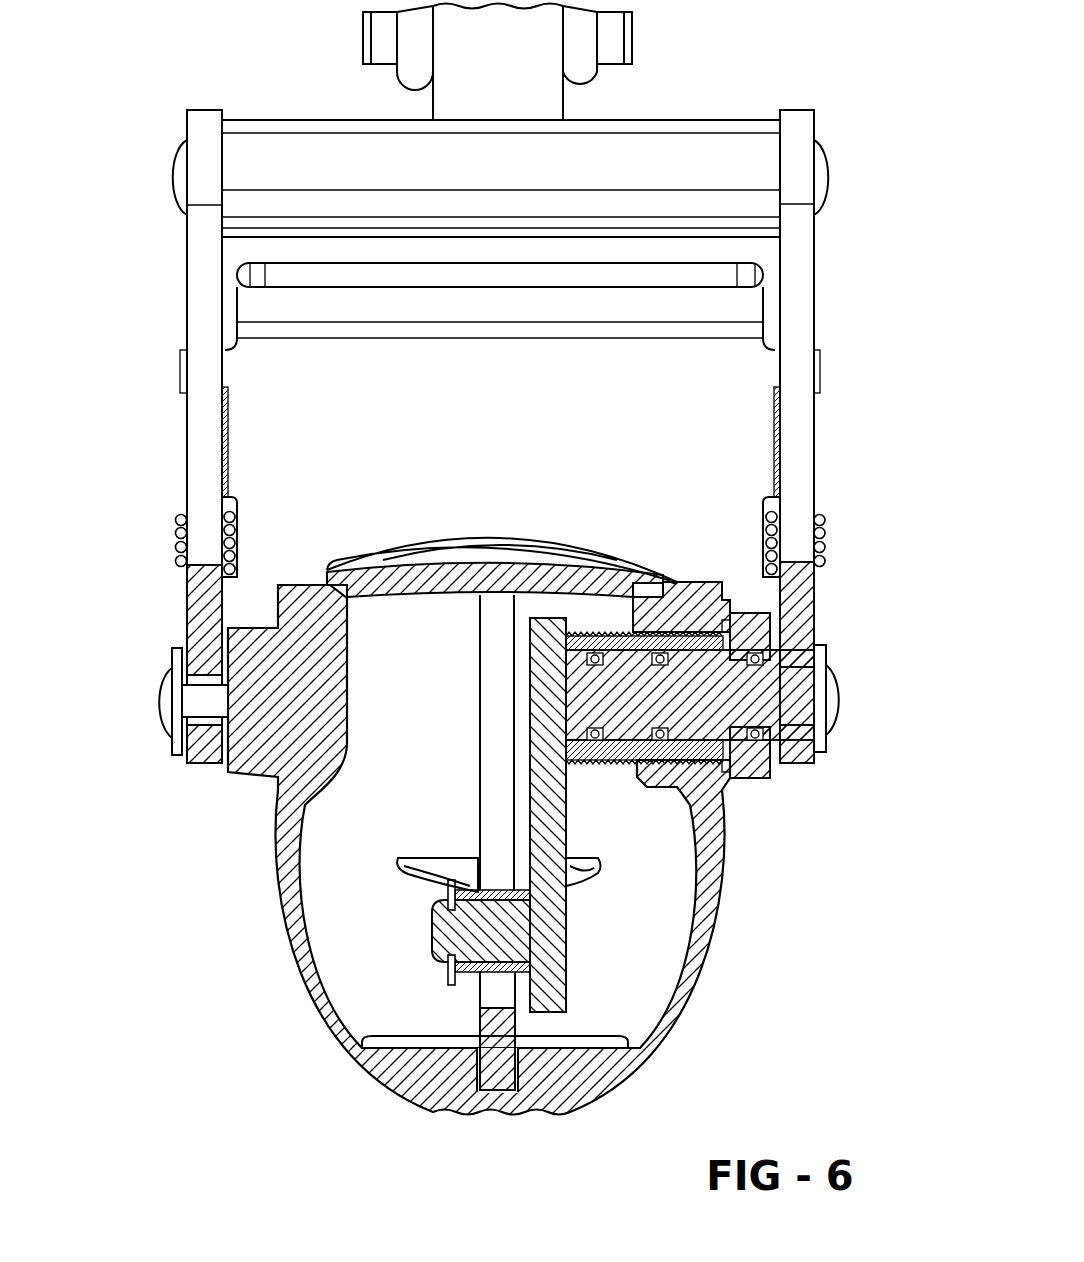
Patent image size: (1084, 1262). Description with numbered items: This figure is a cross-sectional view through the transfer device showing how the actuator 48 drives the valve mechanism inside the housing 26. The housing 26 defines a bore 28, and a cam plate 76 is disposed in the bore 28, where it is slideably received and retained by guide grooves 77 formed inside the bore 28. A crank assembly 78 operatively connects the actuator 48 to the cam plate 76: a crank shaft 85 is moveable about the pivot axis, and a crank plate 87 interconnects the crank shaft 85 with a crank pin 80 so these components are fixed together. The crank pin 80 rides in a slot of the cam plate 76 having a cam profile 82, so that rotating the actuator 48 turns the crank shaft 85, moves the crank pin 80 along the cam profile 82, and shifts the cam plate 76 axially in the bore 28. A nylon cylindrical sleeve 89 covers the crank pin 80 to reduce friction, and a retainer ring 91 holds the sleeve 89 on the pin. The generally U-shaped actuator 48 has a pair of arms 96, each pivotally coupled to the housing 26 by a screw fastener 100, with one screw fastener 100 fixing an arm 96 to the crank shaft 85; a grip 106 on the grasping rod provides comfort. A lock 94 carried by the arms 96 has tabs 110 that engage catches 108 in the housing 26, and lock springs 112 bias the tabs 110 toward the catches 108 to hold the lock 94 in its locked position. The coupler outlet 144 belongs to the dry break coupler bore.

The housing 26 is at (292, 835).
The bore 28 is at (670, 863).
The actuator 48 is at (718, 114).
The cam plate 76 is at (504, 1026).
The guide grooves 77 is at (462, 868).
The crank assembly 78 is at (574, 934).
The crank pin 80 is at (438, 931).
The cam profile 82 is at (493, 820).
The crank shaft 85 is at (798, 703).
The crank plate 87 is at (560, 816).
The cylindrical sleeve 89 is at (503, 950).
The retainer ring 91 is at (383, 1078).
The lock 94 is at (764, 362).
The arms 96 is at (205, 275).
The screw fastener 100 is at (182, 160).
The grip 106 is at (282, 153).
The catches 108 is at (228, 628).
The tabs 110 is at (195, 600).
The lock spring 112 is at (182, 520).
The coupler outlet 144 is at (752, 268).